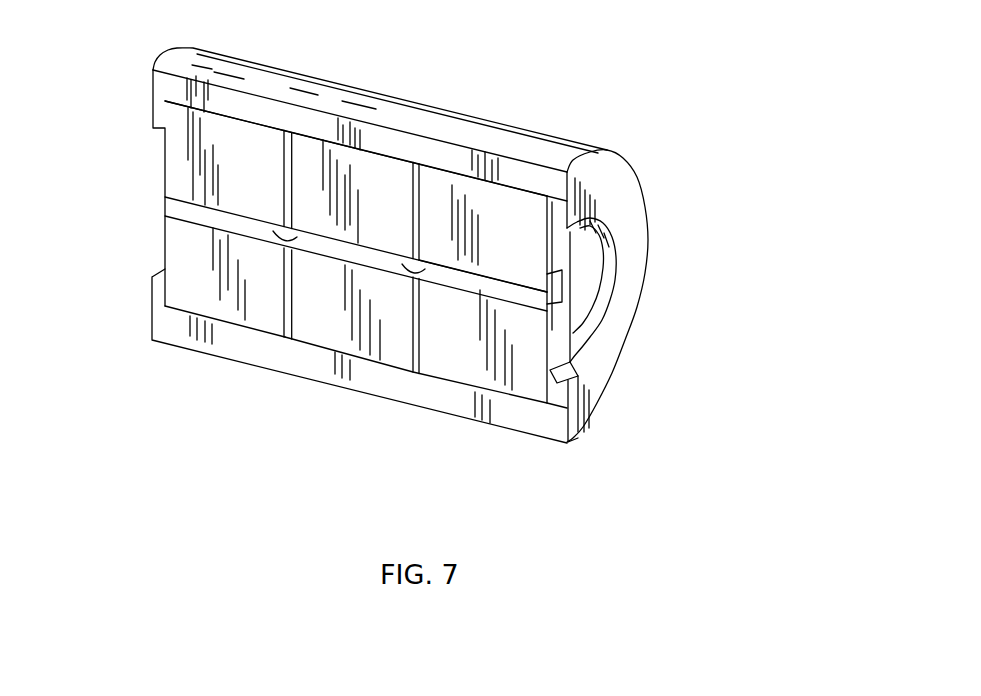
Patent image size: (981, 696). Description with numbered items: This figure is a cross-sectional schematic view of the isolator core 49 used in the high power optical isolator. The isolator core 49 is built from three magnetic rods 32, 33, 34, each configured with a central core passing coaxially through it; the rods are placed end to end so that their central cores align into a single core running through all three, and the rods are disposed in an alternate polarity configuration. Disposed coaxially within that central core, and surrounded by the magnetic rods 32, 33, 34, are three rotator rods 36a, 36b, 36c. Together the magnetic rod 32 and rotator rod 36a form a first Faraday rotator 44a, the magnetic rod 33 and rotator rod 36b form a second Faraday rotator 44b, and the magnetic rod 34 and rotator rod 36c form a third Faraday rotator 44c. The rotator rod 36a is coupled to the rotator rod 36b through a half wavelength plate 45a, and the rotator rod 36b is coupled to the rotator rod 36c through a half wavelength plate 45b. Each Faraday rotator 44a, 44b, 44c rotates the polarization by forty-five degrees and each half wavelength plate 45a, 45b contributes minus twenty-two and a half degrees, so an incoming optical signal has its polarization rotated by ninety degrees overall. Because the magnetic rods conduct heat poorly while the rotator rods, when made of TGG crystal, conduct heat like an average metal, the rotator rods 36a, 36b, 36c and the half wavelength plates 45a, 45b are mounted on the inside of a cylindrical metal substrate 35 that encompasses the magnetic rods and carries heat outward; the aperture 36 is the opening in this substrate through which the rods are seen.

The isolator core 49 is at (712, 49).
The first Faraday rotator 44a is at (238, 117).
The second Faraday rotator 44b is at (374, 151).
The third Faraday rotator 44c is at (517, 190).
The magnetic rod 32 is at (183, 300).
The magnetic rod 33 is at (330, 245).
The magnetic rod 34 is at (447, 363).
The cylindrical metal substrate 35 is at (620, 184).
The aperture in end wall 36 is at (583, 272).
The rotator rod 36a is at (183, 210).
The rotator rod 36b is at (312, 335).
The rotator rod 36c is at (520, 290).
The half wavelength plate 45a is at (280, 229).
The half wavelength plate 45b is at (413, 265).